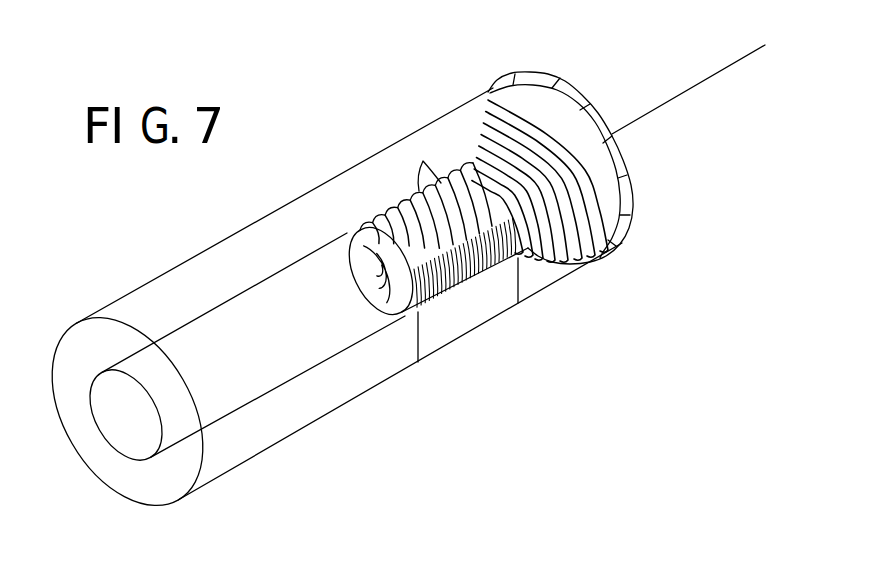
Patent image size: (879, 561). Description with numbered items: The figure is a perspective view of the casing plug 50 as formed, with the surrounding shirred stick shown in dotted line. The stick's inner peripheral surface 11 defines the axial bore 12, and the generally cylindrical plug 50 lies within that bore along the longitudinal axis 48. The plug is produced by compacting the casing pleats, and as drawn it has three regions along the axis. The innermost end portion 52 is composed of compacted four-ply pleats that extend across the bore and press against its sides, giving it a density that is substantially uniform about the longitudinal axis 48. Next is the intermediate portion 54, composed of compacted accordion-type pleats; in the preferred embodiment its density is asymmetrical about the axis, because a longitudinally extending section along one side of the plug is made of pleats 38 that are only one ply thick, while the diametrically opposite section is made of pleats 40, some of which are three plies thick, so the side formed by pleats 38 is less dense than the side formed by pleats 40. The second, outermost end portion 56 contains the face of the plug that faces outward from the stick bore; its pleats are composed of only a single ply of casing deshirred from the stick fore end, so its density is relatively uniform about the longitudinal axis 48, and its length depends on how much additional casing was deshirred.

The inner peripheral surface 11 is at (222, 306).
The axial bore 12 is at (143, 440).
The pleats 38 is at (420, 171).
The pleats 40 is at (417, 313).
The longitudinal axis 48 is at (658, 102).
The plug 50 is at (430, 120).
The innermost end portion 52 is at (383, 272).
The intermediate portion 54 is at (518, 290).
The outermost end portion 56 is at (563, 280).